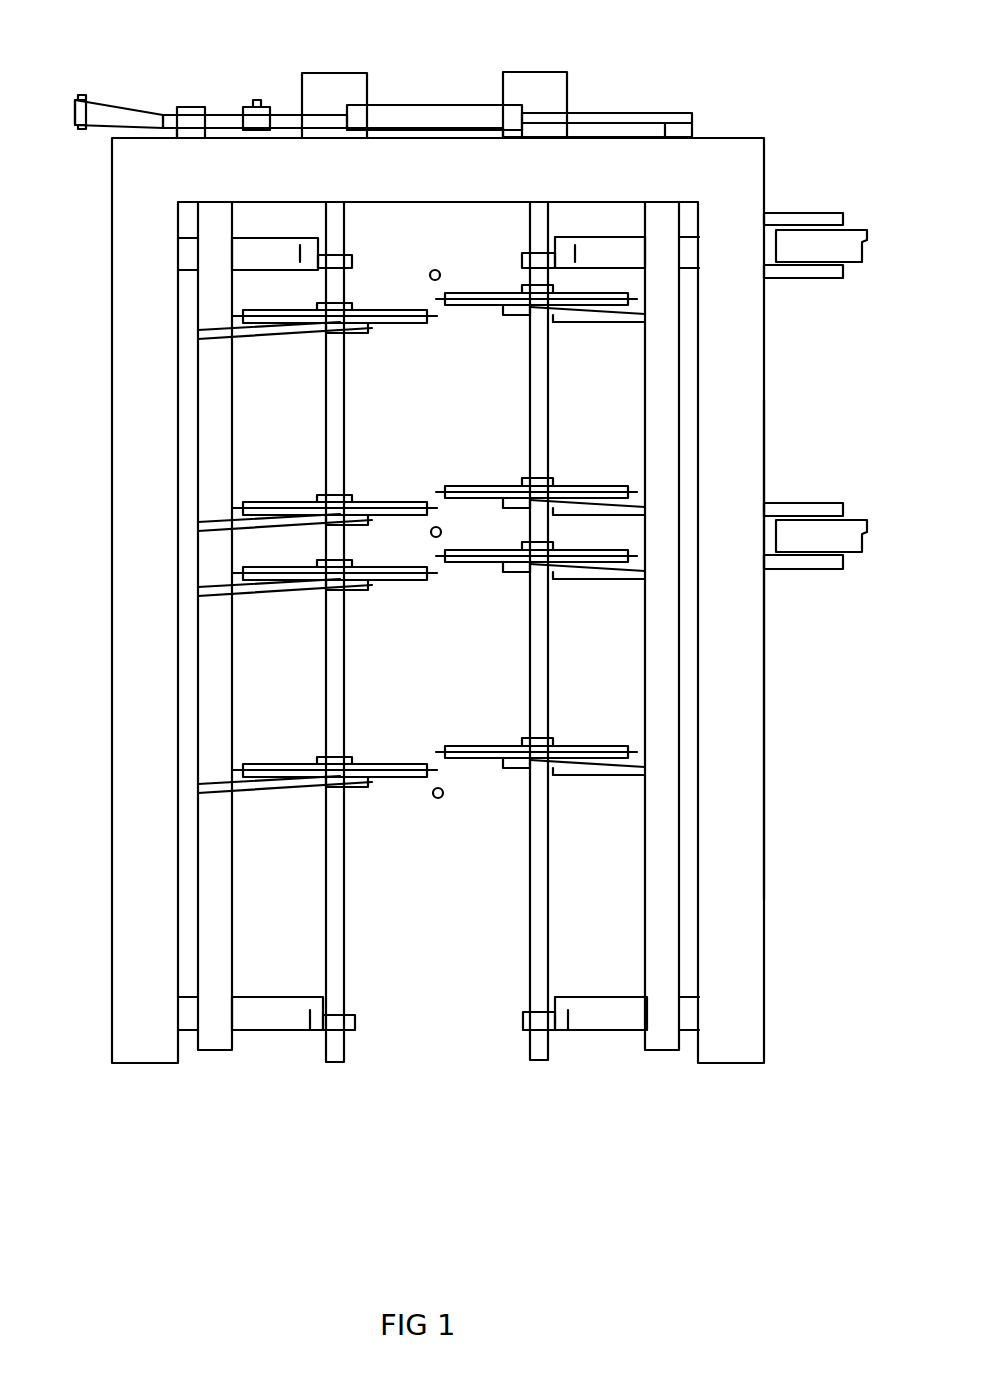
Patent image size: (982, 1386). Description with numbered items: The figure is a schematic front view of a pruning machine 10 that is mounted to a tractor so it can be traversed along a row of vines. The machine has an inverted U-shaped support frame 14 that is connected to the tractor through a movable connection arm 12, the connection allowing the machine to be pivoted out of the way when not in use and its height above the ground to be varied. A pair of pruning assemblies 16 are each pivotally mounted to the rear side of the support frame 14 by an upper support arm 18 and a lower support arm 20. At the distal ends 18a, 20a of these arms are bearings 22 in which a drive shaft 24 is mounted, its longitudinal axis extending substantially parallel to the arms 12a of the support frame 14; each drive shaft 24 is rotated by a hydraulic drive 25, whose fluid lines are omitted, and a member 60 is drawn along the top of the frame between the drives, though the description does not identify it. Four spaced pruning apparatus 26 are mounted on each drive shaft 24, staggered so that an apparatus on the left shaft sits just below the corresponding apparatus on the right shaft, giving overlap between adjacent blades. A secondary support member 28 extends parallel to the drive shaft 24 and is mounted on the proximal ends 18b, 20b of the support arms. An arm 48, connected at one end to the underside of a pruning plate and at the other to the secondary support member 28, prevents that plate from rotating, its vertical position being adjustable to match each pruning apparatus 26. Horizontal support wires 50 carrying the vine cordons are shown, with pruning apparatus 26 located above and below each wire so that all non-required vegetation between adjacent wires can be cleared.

The pruning machine 10 is at (165, 1160).
The movable arm 12 is at (803, 245).
The arms of the support frame 12a is at (730, 678).
The support frame 14 is at (733, 165).
The pruning assembly 16 is at (346, 1090).
The upper support arm 18 is at (262, 237).
The distal end of upper support arm 18a is at (303, 250).
The proximal end of upper support arm 18b is at (180, 261).
The lower support arm 20 is at (268, 1000).
The distal end of lower support arm 20a is at (310, 1010).
The proximal end of lower support arm 20b is at (188, 1020).
The bearing 22 is at (348, 262).
The drive shaft 24 is at (344, 640).
The hydraulic drive 25 is at (336, 90).
The pruning apparatus 26 is at (302, 352).
The secondary support member 28 is at (207, 865).
The arm 48 is at (215, 340).
The support wire 50 is at (431, 276).
The drive rod 60 is at (427, 115).